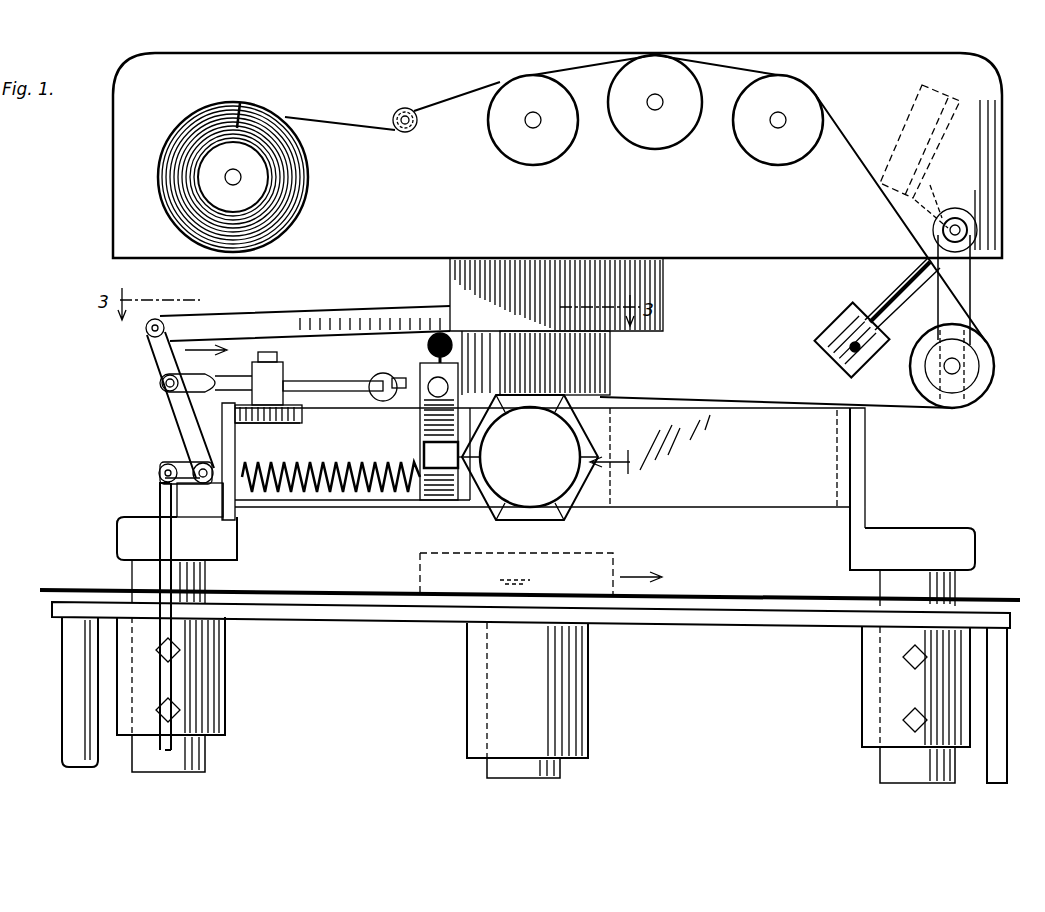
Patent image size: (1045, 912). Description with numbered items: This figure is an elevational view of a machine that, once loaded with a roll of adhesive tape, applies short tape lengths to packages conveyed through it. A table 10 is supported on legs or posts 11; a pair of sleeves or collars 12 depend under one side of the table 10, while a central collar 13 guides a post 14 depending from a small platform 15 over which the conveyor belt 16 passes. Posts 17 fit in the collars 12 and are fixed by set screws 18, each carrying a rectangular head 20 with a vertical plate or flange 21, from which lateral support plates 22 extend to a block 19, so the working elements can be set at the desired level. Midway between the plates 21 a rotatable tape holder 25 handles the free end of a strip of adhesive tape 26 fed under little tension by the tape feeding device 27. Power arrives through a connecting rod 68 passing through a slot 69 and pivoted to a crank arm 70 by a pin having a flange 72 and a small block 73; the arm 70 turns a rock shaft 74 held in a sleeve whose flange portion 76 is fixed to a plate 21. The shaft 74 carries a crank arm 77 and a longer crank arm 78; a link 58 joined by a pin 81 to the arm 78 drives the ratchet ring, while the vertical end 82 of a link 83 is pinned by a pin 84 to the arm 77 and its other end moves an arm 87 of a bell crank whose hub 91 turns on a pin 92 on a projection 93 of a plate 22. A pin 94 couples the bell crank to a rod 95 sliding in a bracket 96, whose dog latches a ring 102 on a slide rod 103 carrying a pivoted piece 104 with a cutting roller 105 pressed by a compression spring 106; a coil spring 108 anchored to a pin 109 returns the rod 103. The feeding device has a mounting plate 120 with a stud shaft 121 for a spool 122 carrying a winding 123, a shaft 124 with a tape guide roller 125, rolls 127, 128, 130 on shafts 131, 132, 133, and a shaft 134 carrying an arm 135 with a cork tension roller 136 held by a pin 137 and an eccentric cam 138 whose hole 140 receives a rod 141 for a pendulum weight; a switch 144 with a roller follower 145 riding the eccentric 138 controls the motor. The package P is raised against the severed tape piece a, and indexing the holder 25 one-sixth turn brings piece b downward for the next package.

The table 10 is at (368, 622).
The legs or posts 11 is at (62, 673).
The sleeves or collars 12 is at (225, 680).
The collar or sleeve 13 is at (588, 684).
The post 14 is at (487, 770).
The platform 15 is at (395, 596).
The conveyor belt 16 is at (683, 576).
The posts 17 is at (205, 752).
The set screws 18 is at (160, 705).
The block 19 is at (610, 352).
The rectangular head 20 is at (955, 528).
The vertical plate or flange 21 is at (250, 500).
The lateral support plates 22 is at (368, 500).
The rotatable tape holder 25 is at (650, 444).
The strip of adhesive tape 26 is at (652, 398).
The tape feeding device 27 is at (755, 262).
The link 58 is at (335, 318).
The connecting rod 68 is at (160, 489).
The slot 69 is at (150, 600).
The crank arm 70 is at (170, 465).
The flange 72 is at (195, 465).
The small block 73 is at (160, 470).
The rock shaft 74 is at (210, 513).
The flange portion 76 is at (178, 408).
The crank arm 77 is at (185, 425).
The crank arm 78 is at (160, 350).
The pin 81 is at (157, 319).
The vertical end 82 is at (160, 378).
The link 83 is at (215, 376).
The pin 84 is at (160, 380).
The arm 87 is at (267, 436).
The hub 91 is at (285, 362).
The pin 92 is at (267, 352).
The projection 93 is at (290, 410).
The pin 94 is at (390, 378).
The rod 95 is at (365, 395).
The bracket 96 is at (386, 373).
The ring 102 is at (842, 320).
The slide rod 103 is at (445, 382).
The piece 104 is at (420, 418).
The cutting roller 105 is at (424, 450).
The compression spring 106 is at (330, 495).
The coil spring 108 is at (450, 338).
The pin 109 is at (432, 333).
The mounting plate 120 is at (975, 70).
The stud shaft 121 is at (233, 185).
The spool 122 is at (237, 128).
The winding 123 is at (310, 183).
The shaft 124 is at (412, 110).
The tape guide roller 125 is at (395, 112).
The roll 127 is at (507, 153).
The roll 128 is at (628, 140).
The roll 130 is at (770, 163).
The shaft 131 is at (525, 120).
The shaft 132 is at (655, 94).
The shaft 133 is at (780, 112).
The shaft 134 is at (932, 226).
The arm 135 is at (970, 283).
The tension roller 136 is at (976, 398).
The pin 137 is at (951, 375).
The eccentric cam 138 is at (948, 220).
The hole 140 is at (945, 240).
The rod 141 is at (897, 300).
The switch 144 is at (915, 110).
The roller follower 145 is at (918, 185).
The severed piece of tape a is at (565, 520).
The severed piece of tape b is at (478, 507).
The package P is at (516, 575).